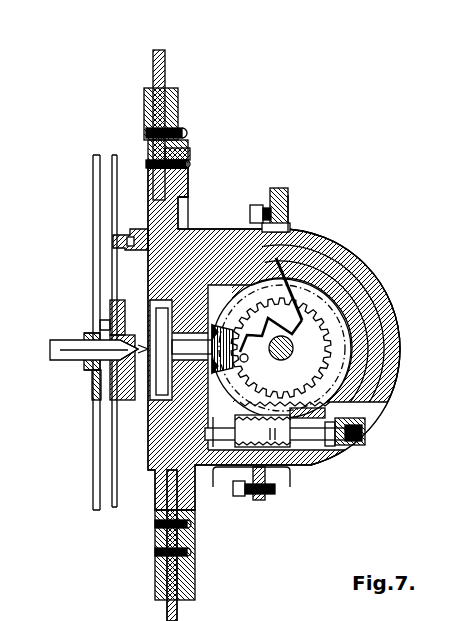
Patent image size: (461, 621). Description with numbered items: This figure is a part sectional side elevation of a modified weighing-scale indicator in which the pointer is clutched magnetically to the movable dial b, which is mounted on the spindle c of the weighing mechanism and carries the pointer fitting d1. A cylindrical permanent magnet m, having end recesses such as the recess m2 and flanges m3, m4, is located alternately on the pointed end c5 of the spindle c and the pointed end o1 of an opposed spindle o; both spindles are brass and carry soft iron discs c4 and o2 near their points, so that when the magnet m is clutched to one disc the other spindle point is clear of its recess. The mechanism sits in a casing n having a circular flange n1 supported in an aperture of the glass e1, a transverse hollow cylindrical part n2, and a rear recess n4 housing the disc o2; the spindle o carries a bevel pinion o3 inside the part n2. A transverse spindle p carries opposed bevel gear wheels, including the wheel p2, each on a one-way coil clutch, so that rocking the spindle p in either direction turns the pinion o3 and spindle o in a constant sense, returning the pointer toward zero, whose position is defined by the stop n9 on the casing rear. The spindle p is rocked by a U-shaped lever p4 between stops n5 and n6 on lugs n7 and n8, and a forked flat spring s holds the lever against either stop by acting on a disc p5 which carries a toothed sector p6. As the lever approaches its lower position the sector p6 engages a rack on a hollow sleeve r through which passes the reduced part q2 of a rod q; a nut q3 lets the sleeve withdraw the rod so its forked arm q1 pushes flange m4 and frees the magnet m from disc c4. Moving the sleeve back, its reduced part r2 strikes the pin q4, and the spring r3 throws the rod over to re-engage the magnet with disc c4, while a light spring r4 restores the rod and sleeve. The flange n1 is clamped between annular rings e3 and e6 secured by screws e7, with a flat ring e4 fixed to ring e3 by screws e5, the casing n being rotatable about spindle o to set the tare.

The sheet of glass e1 is at (160, 52).
The annular ring e3 is at (146, 90).
The flat annular ring e4 is at (176, 92).
The screws e5 is at (182, 132).
The annular ring e6 is at (184, 150).
The screws e7 is at (190, 158).
The circular flange n1 is at (172, 217).
The stop n9 is at (142, 233).
The casing n is at (198, 242).
The lug n7 is at (258, 205).
The fixed stop n5 is at (281, 190).
The U-shaped lever p4 is at (290, 205).
The flat spring s is at (353, 264).
The toothed sector p6 is at (333, 301).
The bevel gear wheel p2 is at (340, 344).
The disc p5 is at (400, 360).
The bevel pinion o3 is at (294, 342).
The transversely disposed spindle p is at (282, 348).
The hollow cylindrical sleeve r is at (289, 408).
The hollow substantially cylindrical part n2 is at (256, 289).
The soft iron disc o2 is at (152, 430).
The spindle o is at (210, 342).
The pointed end o1 is at (147, 364).
The fitting d1 is at (112, 177).
The movable dial b is at (93, 209).
The flange m4 is at (118, 298).
The flange m3 is at (100, 305).
The permanent magnet m is at (92, 320).
The recess m2 is at (135, 393).
The soft iron disc c4 is at (90, 388).
The spindle c is at (52, 351).
The pointed end c5 is at (102, 363).
The recess n4 is at (128, 346).
The rod q is at (160, 461).
The reduced part q2 is at (272, 470).
The nut q3 is at (350, 433).
The transversely extending pin q4 is at (282, 472).
The forked arm q1 is at (148, 449).
The part of reduced diameter r2 is at (320, 467).
The spring r3 is at (340, 465).
The light spring r4 is at (228, 465).
The fixed stop n6 is at (278, 498).
The lug n8 is at (262, 498).